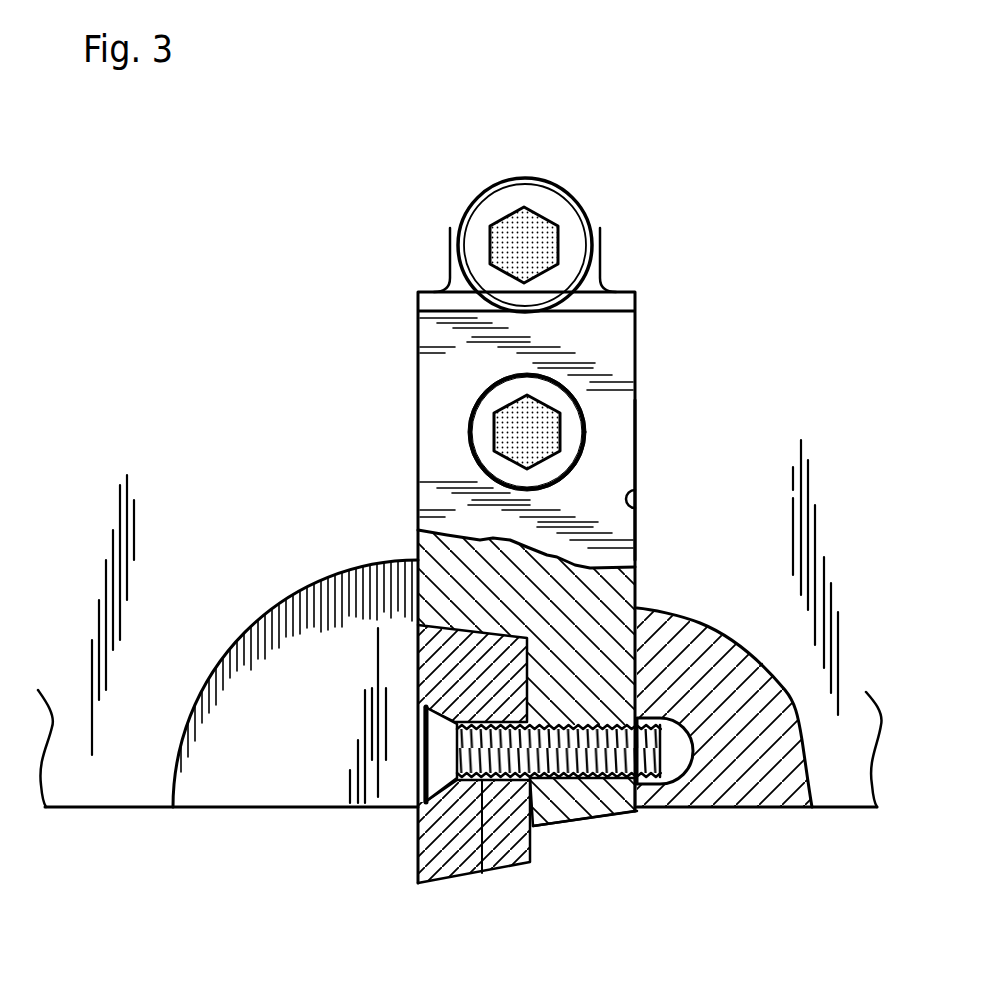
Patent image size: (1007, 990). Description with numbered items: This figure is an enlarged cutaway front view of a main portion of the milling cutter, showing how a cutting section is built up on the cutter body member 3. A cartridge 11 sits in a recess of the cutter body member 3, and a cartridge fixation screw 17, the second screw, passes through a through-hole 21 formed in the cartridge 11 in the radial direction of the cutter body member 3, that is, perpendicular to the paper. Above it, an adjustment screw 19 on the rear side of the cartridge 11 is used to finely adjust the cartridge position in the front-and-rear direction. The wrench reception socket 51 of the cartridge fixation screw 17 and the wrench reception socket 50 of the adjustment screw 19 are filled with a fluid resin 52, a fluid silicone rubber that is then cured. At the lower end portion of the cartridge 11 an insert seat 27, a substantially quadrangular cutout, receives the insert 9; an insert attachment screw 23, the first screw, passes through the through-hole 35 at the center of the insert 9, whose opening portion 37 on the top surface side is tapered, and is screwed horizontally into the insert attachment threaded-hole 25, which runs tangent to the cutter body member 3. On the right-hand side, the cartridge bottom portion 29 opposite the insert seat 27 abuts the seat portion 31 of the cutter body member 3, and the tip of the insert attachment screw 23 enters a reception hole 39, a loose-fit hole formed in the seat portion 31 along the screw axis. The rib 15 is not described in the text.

The cutter body member 3 is at (95, 793).
The cutting insert 9 is at (503, 848).
The cartridge 11 is at (610, 330).
The rib 15 is at (260, 780).
The cartridge fixation screw 17 is at (568, 427).
The adjustment screw 19 is at (540, 198).
The through-hole 21 is at (480, 395).
The insert attachment screw 23 is at (418, 728).
The insert attachment threaded-hole 25 is at (590, 785).
The insert seat 27 is at (533, 820).
The cartridge bottom portion 29 is at (635, 457).
The seat portion 31 is at (637, 510).
The through-hole 35 is at (477, 870).
The opening portion 37 is at (423, 825).
The reception hole 39 is at (670, 775).
The wrench reception socket 50 is at (487, 235).
The wrench reception socket 51 is at (497, 453).
The fluid resin 52 is at (530, 250).